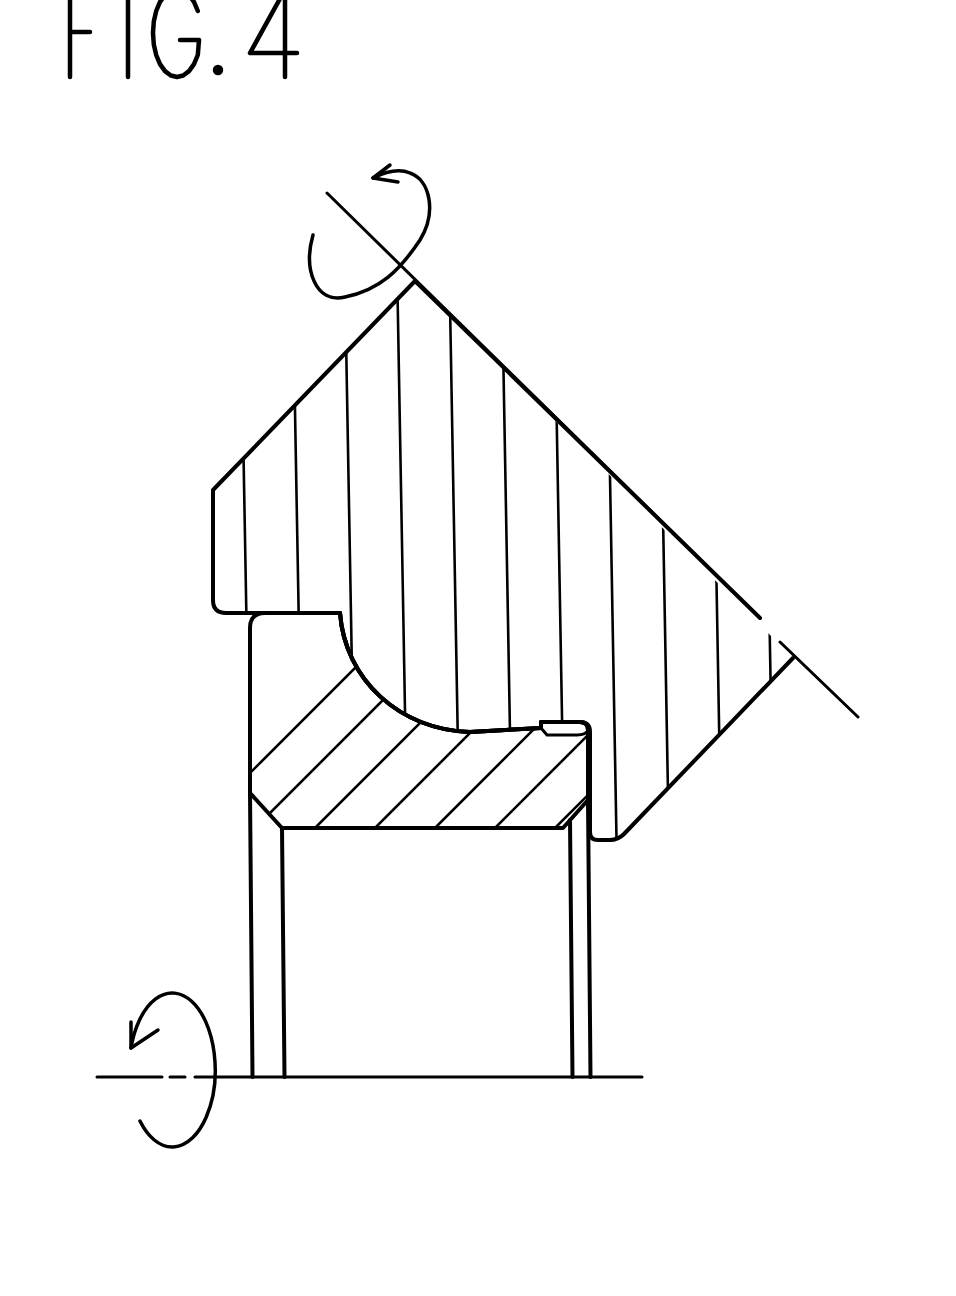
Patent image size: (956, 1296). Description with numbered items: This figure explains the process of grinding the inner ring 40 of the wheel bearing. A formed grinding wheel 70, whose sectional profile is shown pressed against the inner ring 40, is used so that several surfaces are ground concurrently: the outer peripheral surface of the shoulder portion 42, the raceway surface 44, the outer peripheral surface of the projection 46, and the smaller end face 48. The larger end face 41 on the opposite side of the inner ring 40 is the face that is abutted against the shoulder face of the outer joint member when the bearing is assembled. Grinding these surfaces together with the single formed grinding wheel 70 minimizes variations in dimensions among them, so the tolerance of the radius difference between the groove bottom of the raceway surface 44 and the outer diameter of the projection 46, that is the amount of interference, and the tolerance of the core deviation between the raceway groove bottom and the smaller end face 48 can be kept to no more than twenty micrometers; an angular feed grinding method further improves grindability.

The inner ring 40 is at (240, 748).
The larger end face 41 is at (247, 678).
The shoulder portion 42 is at (290, 612).
The raceway surface 44 is at (435, 722).
The projection 46 is at (521, 712).
The smaller end face 48 is at (592, 773).
The formed grinding wheel 70 is at (310, 390).